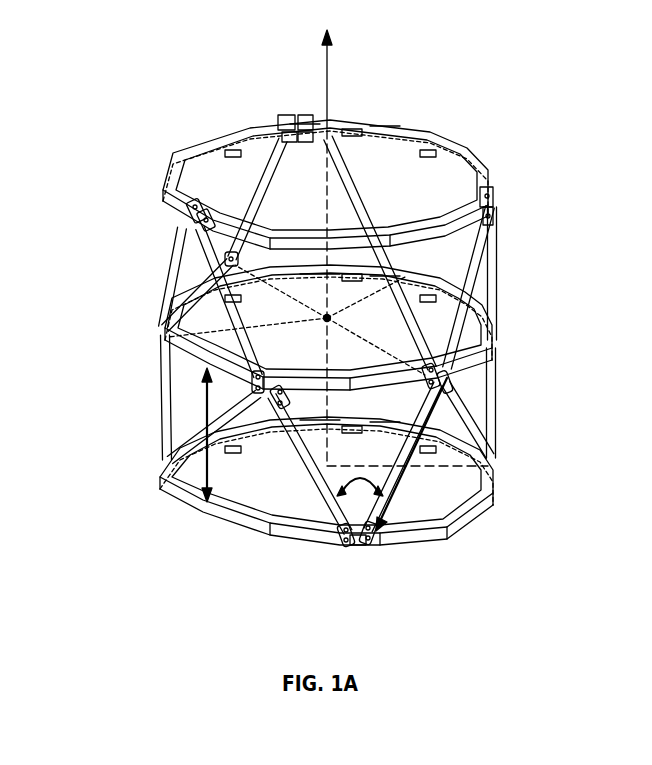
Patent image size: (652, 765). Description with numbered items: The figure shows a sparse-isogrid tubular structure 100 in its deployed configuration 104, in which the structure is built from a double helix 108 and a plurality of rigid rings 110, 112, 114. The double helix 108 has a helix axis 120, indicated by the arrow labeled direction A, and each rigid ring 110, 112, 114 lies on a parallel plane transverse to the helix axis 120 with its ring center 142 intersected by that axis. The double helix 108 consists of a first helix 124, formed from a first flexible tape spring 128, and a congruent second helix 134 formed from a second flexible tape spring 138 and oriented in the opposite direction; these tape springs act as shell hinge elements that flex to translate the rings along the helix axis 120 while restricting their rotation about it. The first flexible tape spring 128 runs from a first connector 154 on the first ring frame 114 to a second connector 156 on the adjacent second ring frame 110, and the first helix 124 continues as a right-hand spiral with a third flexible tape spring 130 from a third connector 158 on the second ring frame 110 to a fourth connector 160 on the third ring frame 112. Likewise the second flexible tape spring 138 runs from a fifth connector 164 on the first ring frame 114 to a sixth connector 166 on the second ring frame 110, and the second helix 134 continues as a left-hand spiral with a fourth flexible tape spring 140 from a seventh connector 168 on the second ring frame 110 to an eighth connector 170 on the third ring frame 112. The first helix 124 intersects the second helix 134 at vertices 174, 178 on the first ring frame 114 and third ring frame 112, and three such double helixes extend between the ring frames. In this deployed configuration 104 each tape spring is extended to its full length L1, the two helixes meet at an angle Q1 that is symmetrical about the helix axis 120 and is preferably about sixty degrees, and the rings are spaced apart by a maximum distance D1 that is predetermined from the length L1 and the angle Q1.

The tubular structure 100 is at (195, 78).
The deployed configuration 104 is at (458, 134).
The double helix 108 is at (234, 569).
The rigid ring 110 is at (163, 337).
The rigid ring 112 is at (170, 180).
The rigid ring 114 is at (215, 520).
The helix axis 120 is at (330, 130).
The first helix 124 is at (402, 152).
The first flexible tape spring 128 is at (380, 237).
The third flexible tape spring 130 is at (348, 190).
The second helix 134 is at (120, 198).
The second flexible tape spring 138 is at (180, 267).
The fourth flexible tape spring 140 is at (270, 175).
The ring center 142 is at (325, 318).
The first connector 154 is at (367, 541).
The second connector 156 is at (417, 400).
The third connector 158 is at (449, 388).
The fourth connector 160 is at (191, 203).
The fifth connector 164 is at (347, 541).
The sixth connector 166 is at (270, 400).
The seventh connector 168 is at (266, 373).
The eighth connector 170 is at (212, 213).
The vertex 174 is at (430, 587).
The vertex 178 is at (293, 112).
The direction A is at (328, 100).
The maximum distance D1 is at (207, 440).
The angle Q1 is at (360, 479).
The full length L1 is at (410, 483).